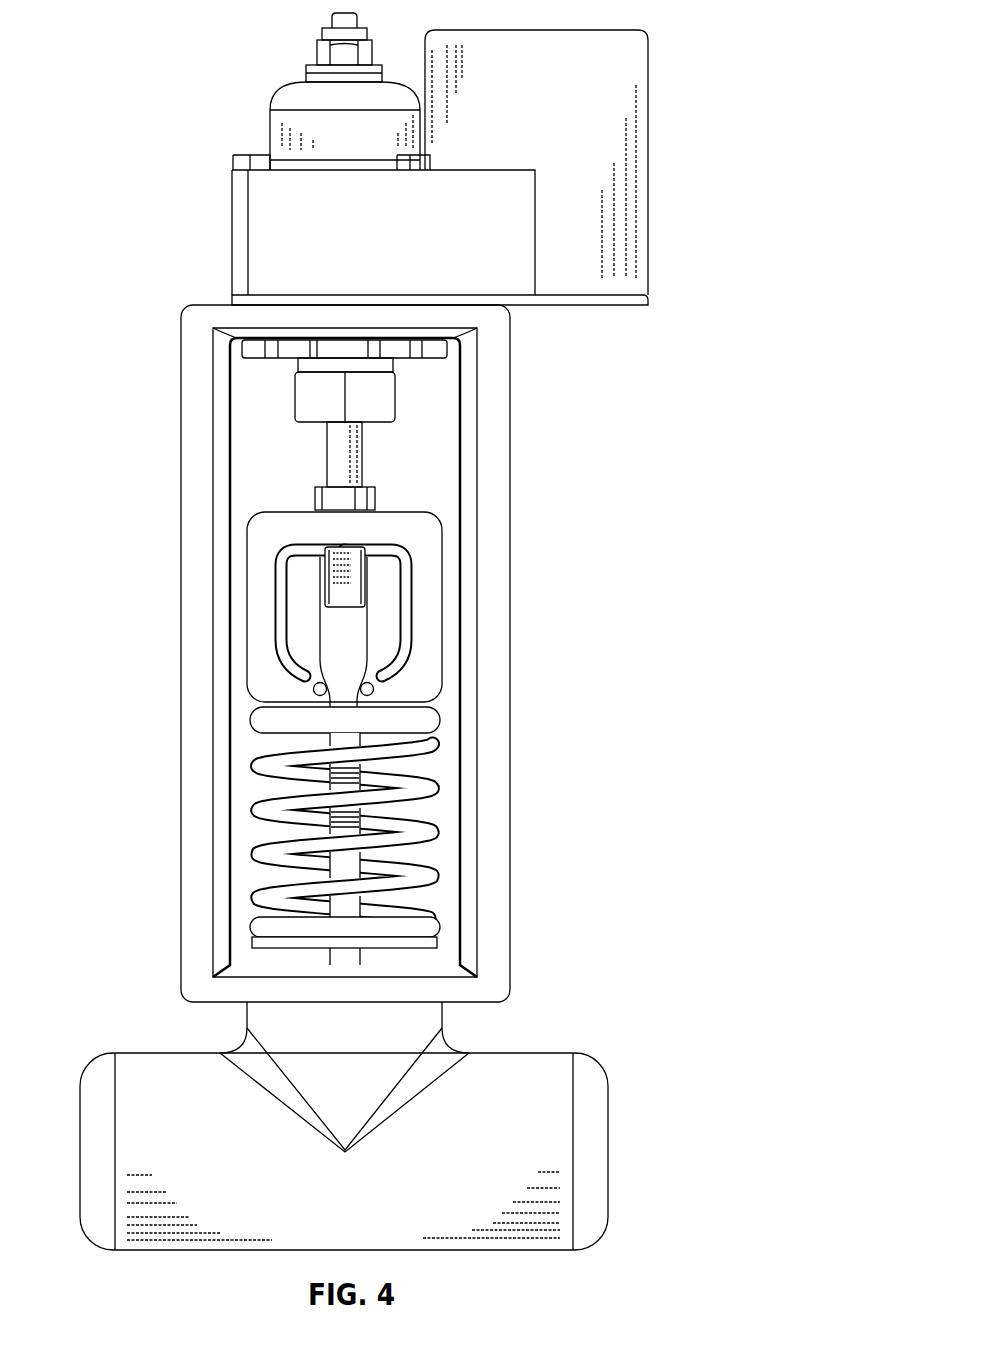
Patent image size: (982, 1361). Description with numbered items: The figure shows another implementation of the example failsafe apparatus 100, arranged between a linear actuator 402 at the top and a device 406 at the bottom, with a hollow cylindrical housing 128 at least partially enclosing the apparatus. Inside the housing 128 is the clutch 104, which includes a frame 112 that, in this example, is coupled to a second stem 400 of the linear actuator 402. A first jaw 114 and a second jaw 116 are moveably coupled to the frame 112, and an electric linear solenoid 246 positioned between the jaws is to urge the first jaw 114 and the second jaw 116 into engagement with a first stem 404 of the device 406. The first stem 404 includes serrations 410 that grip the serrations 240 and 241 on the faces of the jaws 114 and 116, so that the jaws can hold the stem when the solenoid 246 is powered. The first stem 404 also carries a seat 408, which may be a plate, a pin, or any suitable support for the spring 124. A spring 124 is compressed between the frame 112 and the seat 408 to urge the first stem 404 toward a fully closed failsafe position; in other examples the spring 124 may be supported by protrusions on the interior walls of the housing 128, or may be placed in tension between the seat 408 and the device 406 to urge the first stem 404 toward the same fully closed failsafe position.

The linear actuator 402 is at (662, 207).
The housing 128 is at (200, 340).
The second stem 400 is at (345, 463).
The electric linear solenoid 246 is at (353, 558).
The failsafe apparatus 100 is at (462, 532).
The clutch 104 is at (244, 564).
The frame 112 is at (428, 607).
The first jaw 114 is at (298, 637).
The second jaw 116 is at (390, 628).
The serrations 240 is at (300, 736).
The serrations 241 is at (400, 733).
The spring 124 is at (258, 765).
The serrations 410 is at (330, 778).
The first stem 404 is at (349, 868).
The seat 408 is at (437, 940).
The device 406 is at (624, 1165).